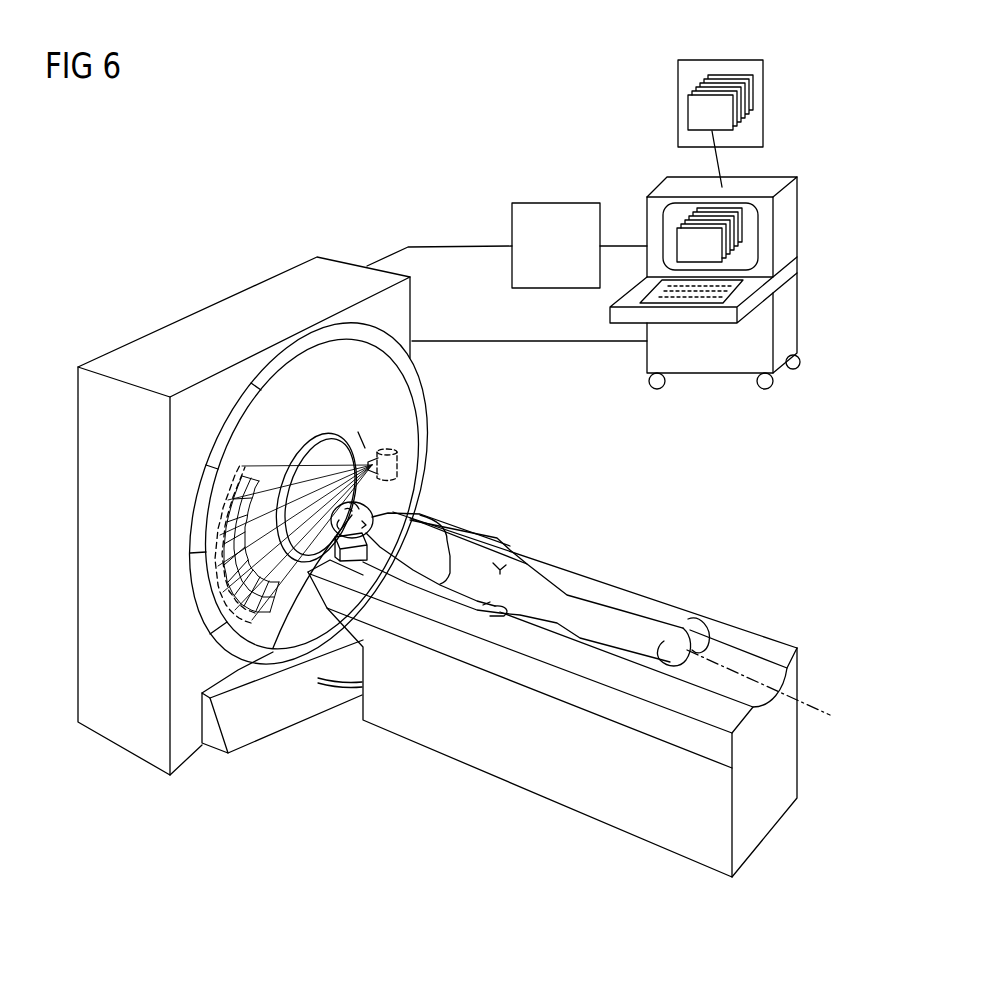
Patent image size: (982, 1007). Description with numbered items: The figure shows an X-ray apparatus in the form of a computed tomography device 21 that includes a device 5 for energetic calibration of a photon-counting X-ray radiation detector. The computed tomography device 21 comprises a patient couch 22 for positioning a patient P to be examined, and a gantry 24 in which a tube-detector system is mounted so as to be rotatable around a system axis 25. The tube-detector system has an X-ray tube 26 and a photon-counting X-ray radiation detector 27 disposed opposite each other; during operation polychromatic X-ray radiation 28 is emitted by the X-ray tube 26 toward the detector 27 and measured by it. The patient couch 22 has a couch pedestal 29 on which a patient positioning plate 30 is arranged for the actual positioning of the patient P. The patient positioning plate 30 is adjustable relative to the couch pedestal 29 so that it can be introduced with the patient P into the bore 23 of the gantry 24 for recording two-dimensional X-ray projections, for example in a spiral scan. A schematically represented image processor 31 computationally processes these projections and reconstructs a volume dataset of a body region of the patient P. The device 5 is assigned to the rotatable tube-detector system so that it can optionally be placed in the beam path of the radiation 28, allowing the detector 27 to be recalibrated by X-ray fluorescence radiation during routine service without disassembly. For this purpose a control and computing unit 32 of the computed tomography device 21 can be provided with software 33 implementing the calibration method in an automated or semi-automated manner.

The device for energetic calibration 5 is at (367, 437).
The computed tomography device 21 is at (545, 430).
The patient couch 22 is at (768, 648).
The bore 23 is at (312, 462).
The gantry 24 is at (240, 313).
The system axis 25 is at (825, 708).
The X-ray tube 26 is at (397, 462).
The photon-counting X-ray radiation detector 27 is at (256, 613).
The polychromatic X-ray radiation 28 is at (338, 456).
The couch pedestal 29 is at (505, 766).
The patient positioning plate 30 is at (714, 637).
The image processor 31 is at (558, 202).
The control and computing unit 32 is at (715, 373).
The software 33 is at (763, 98).
The patient P is at (447, 558).